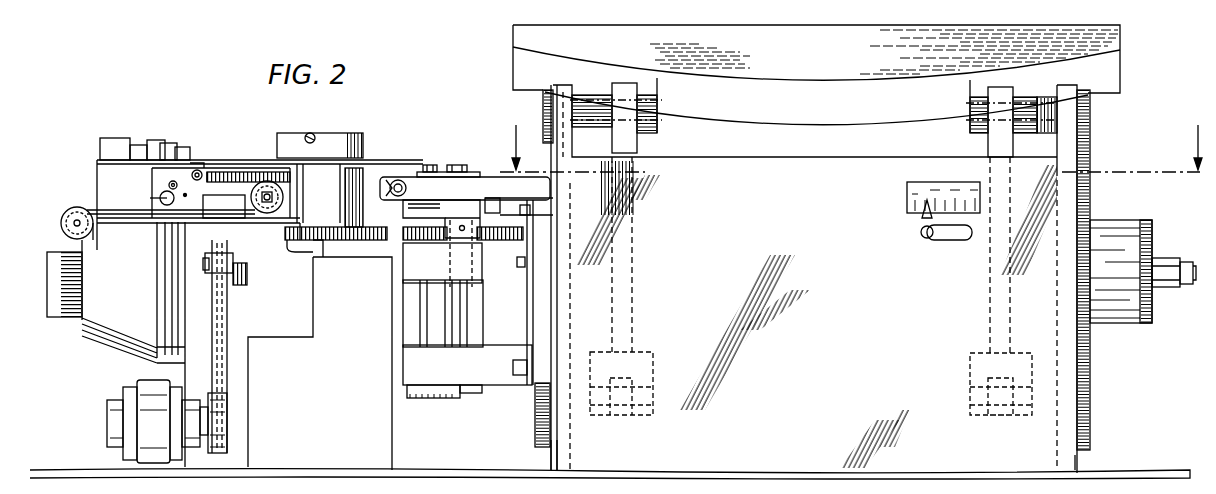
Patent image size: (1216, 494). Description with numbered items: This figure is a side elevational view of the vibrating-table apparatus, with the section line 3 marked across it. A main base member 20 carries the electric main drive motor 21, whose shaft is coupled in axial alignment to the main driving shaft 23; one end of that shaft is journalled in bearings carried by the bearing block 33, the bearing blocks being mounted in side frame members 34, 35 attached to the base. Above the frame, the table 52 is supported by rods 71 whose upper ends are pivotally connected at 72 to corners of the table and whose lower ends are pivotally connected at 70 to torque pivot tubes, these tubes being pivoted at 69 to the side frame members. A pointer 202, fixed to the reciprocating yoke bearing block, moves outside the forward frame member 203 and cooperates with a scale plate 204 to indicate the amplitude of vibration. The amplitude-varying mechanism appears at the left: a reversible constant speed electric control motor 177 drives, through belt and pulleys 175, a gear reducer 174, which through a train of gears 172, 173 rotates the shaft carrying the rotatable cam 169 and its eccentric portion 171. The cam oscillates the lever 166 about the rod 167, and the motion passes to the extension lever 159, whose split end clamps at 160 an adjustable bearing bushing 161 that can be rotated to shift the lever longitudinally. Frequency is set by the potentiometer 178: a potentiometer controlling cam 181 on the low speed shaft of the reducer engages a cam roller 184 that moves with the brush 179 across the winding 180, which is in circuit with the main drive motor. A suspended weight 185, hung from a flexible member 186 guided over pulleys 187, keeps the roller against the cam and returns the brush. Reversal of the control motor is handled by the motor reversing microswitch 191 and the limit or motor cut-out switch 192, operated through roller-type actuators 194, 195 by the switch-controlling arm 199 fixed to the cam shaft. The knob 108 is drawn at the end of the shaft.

The main base member 20 is at (1160, 473).
The electric main drive motor 21 is at (70, 241).
The main driving shaft 23 is at (1172, 289).
The bearing block 33 is at (1120, 320).
The side frame member 34 is at (551, 463).
The side frame member 35 is at (1078, 462).
The table 52 is at (518, 34).
The pivot 69 is at (545, 128).
The pivotal connection 70 is at (652, 380).
The rods 71 is at (633, 273).
The pivotal connection 72 is at (658, 114).
The knob 108 is at (1188, 261).
The extension lever 159 is at (470, 232).
The clamp screw 160 is at (400, 196).
The adjustable bearing bushing 161 is at (447, 171).
The lever 166 is at (468, 230).
The rod 167 is at (460, 320).
The rotatable cam 169 is at (477, 172).
The eccentric portion 171 is at (460, 169).
The gear 172 is at (431, 237).
The gear 173 is at (300, 241).
The gear reducer 174 is at (392, 446).
The belt and pulleys 175 is at (220, 386).
The reversible constant speed electric control motor 177 is at (147, 393).
The potentiometer 178 is at (219, 166).
The brush 179 is at (200, 168).
The winding 180 is at (233, 172).
The potentiometer controlling cam 181 is at (257, 160).
The cam roller 184 is at (178, 148).
The suspended weight 185 is at (55, 304).
The flexible member 186 is at (100, 210).
The pulleys 187 is at (94, 233).
The motor reversing microswitch 191 is at (145, 157).
The limit or motor cut-out switch 192 is at (103, 145).
The roller-type actuator 194 is at (145, 142).
The roller-type actuator 195 is at (160, 143).
The switch-controlling arm 199 is at (197, 170).
The pointer 202 is at (920, 229).
The forward frame member 203 is at (822, 176).
The scale plate 204 is at (907, 202).
The section line 3- 3 is at (851, 147).